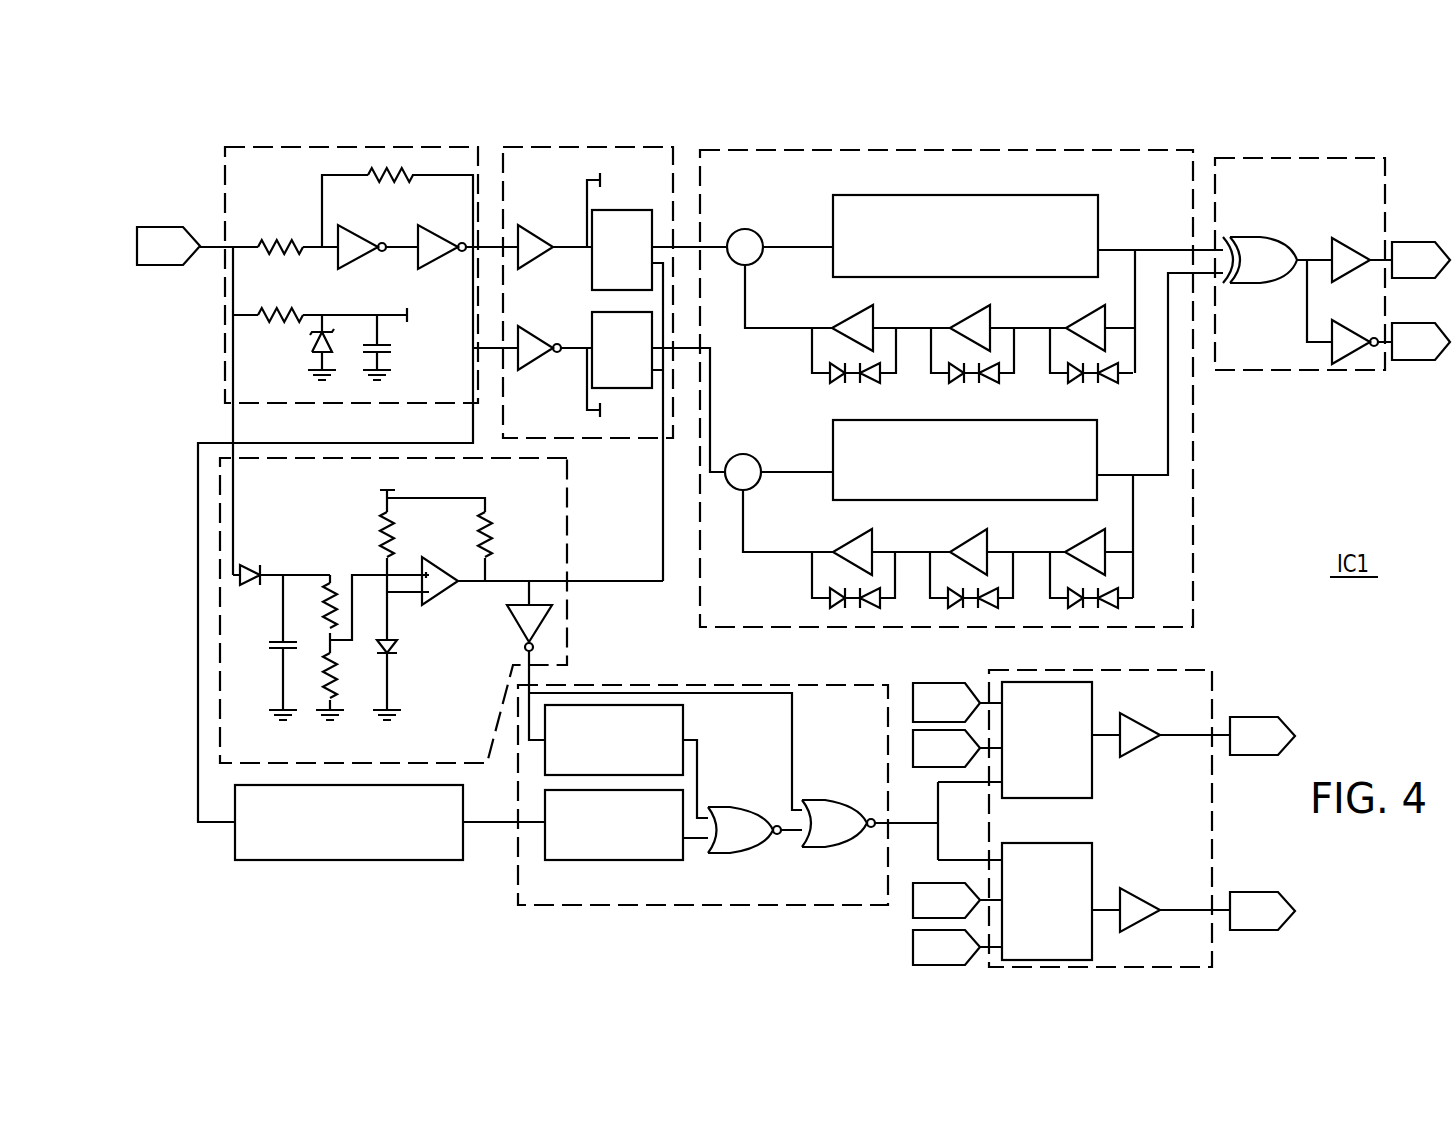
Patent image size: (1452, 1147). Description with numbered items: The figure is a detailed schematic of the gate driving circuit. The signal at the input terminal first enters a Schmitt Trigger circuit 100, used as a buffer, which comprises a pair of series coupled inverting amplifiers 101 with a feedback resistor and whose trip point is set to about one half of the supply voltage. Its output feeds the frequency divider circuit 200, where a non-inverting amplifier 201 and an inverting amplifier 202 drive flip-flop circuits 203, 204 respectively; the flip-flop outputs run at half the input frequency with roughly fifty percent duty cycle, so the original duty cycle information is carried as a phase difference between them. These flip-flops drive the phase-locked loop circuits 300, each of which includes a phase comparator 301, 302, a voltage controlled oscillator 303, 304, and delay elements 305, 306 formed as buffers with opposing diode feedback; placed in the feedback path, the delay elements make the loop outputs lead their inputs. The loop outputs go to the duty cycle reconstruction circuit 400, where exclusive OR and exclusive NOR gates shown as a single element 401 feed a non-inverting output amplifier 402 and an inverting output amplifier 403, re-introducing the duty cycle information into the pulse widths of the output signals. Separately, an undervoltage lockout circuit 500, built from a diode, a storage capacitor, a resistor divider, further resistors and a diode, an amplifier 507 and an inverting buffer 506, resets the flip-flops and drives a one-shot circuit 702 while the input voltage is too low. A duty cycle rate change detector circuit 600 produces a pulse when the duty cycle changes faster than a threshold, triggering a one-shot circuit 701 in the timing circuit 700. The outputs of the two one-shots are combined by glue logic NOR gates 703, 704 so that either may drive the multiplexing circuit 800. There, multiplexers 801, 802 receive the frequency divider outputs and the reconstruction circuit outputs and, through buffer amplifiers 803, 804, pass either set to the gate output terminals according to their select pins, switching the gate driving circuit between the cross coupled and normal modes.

The Schmitt Trigger circuit 100 is at (327, 484).
The inverting amplifiers 101 is at (420, 258).
The frequency divider circuit 200 is at (615, 364).
The non-inverting amplifier circuit 201 is at (530, 236).
The inverting amplifier circuit 202 is at (521, 368).
The flip-flop circuit 203 is at (592, 272).
The flip-flop circuit 204 is at (592, 330).
The phase-locked loop circuits 300 is at (971, 388).
The phase comparator 301 is at (760, 240).
The phase comparator 302 is at (758, 466).
The voltage controlled oscillator 303 is at (1098, 223).
The voltage controlled oscillator 304 is at (1097, 458).
The delay elements 305 is at (1074, 318).
The delay elements 306 is at (1072, 542).
The duty cycle reconstruction circuit 400 is at (1332, 298).
The exclusive OR / exclusive NOR gate element 401 is at (1250, 283).
The non-inverting output amplifier 402 is at (1362, 230).
The inverting output amplifier 403 is at (1362, 312).
The undervoltage lockout circuit 500 is at (479, 634).
The inverting buffer 506 is at (544, 628).
The amplifier 507 is at (437, 600).
The duty cycle rate change detector circuit 600 is at (400, 874).
The timing circuit 700 is at (728, 818).
The one-shot circuit 701 is at (594, 862).
The one-shot circuit 702 is at (683, 708).
The NOR gate 703 is at (760, 807).
The NOR gate 704 is at (855, 800).
The multiplexing circuit 800 is at (1105, 817).
The multiplexer 801 is at (1092, 706).
The multiplexer 802 is at (1092, 938).
The buffer amplifier 803 is at (1148, 722).
The buffer amplifier 804 is at (1148, 923).